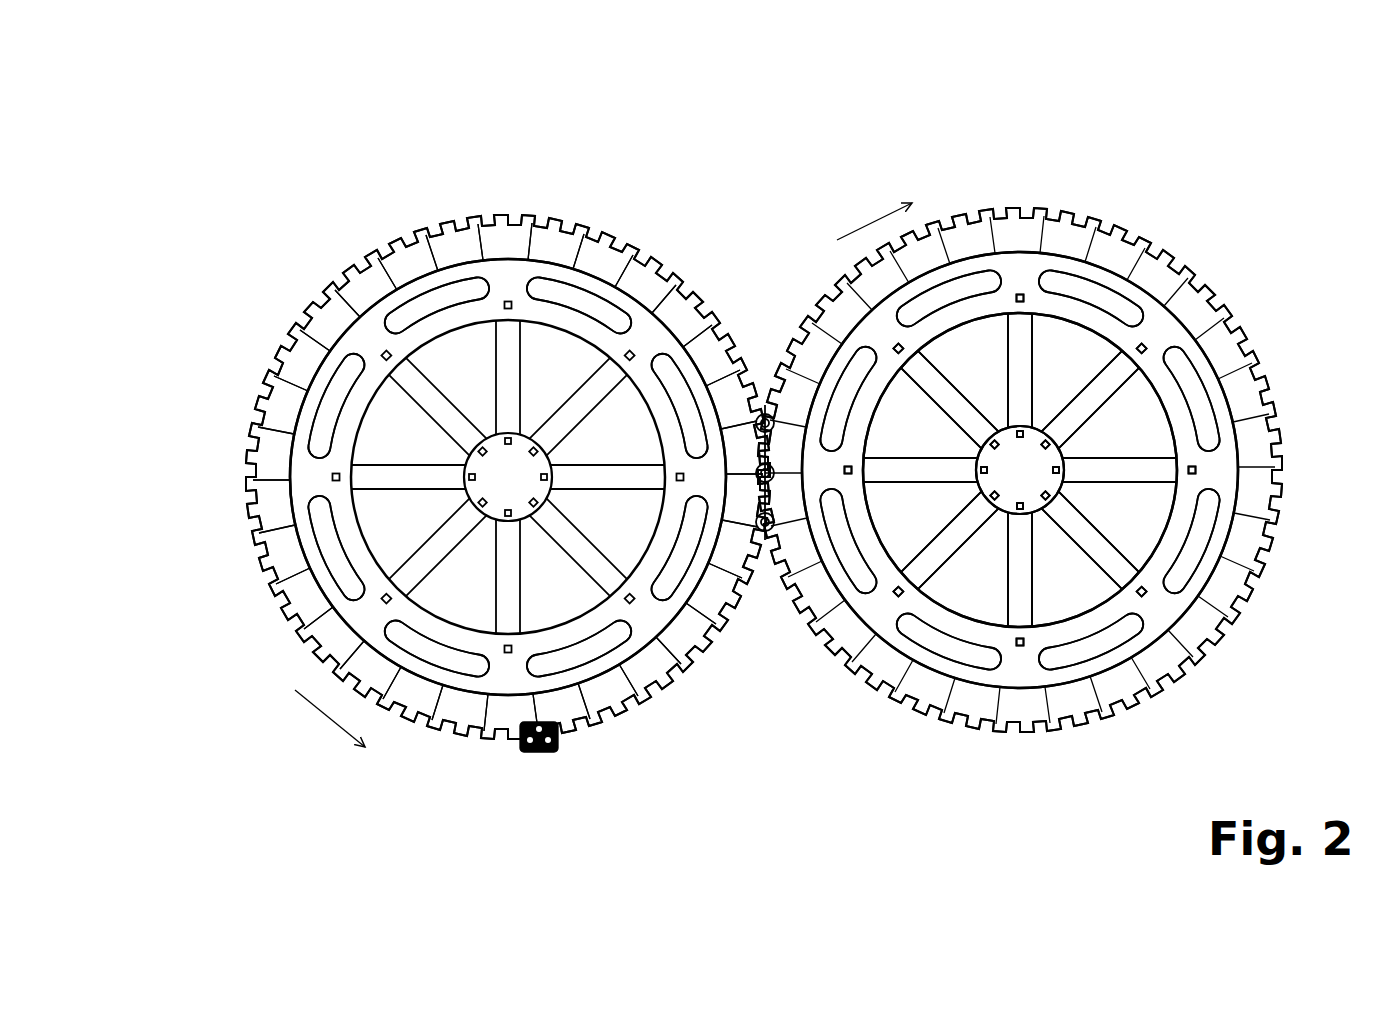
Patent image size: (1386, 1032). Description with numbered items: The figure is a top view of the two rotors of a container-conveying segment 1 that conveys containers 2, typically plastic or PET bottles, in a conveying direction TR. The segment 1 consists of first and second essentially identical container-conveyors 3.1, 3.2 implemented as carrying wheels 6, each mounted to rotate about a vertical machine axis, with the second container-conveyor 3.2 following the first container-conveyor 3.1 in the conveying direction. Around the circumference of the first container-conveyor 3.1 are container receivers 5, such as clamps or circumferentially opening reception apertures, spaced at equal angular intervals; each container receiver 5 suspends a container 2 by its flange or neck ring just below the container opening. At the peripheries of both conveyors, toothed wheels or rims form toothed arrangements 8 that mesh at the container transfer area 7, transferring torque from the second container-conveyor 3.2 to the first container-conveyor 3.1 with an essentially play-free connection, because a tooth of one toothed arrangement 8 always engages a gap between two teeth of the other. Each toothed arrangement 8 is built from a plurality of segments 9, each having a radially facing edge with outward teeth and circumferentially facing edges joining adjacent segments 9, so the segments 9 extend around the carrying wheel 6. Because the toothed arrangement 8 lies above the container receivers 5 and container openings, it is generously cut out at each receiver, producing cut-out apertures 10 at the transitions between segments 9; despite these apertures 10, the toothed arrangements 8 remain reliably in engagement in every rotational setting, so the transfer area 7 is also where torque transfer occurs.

The container-conveying segment 1 is at (1180, 147).
The container 2 is at (558, 748).
The first container-conveyor 3.1 is at (383, 205).
The second container-conveyor 3.2 is at (1053, 742).
The container receiver 5 is at (1020, 471).
The carrying wheel 6 is at (350, 547).
The container transfer area 7 is at (768, 368).
The toothed arrangement 8 is at (285, 345).
The segment 9 is at (287, 458).
The cut-out aperture 10 is at (538, 213).